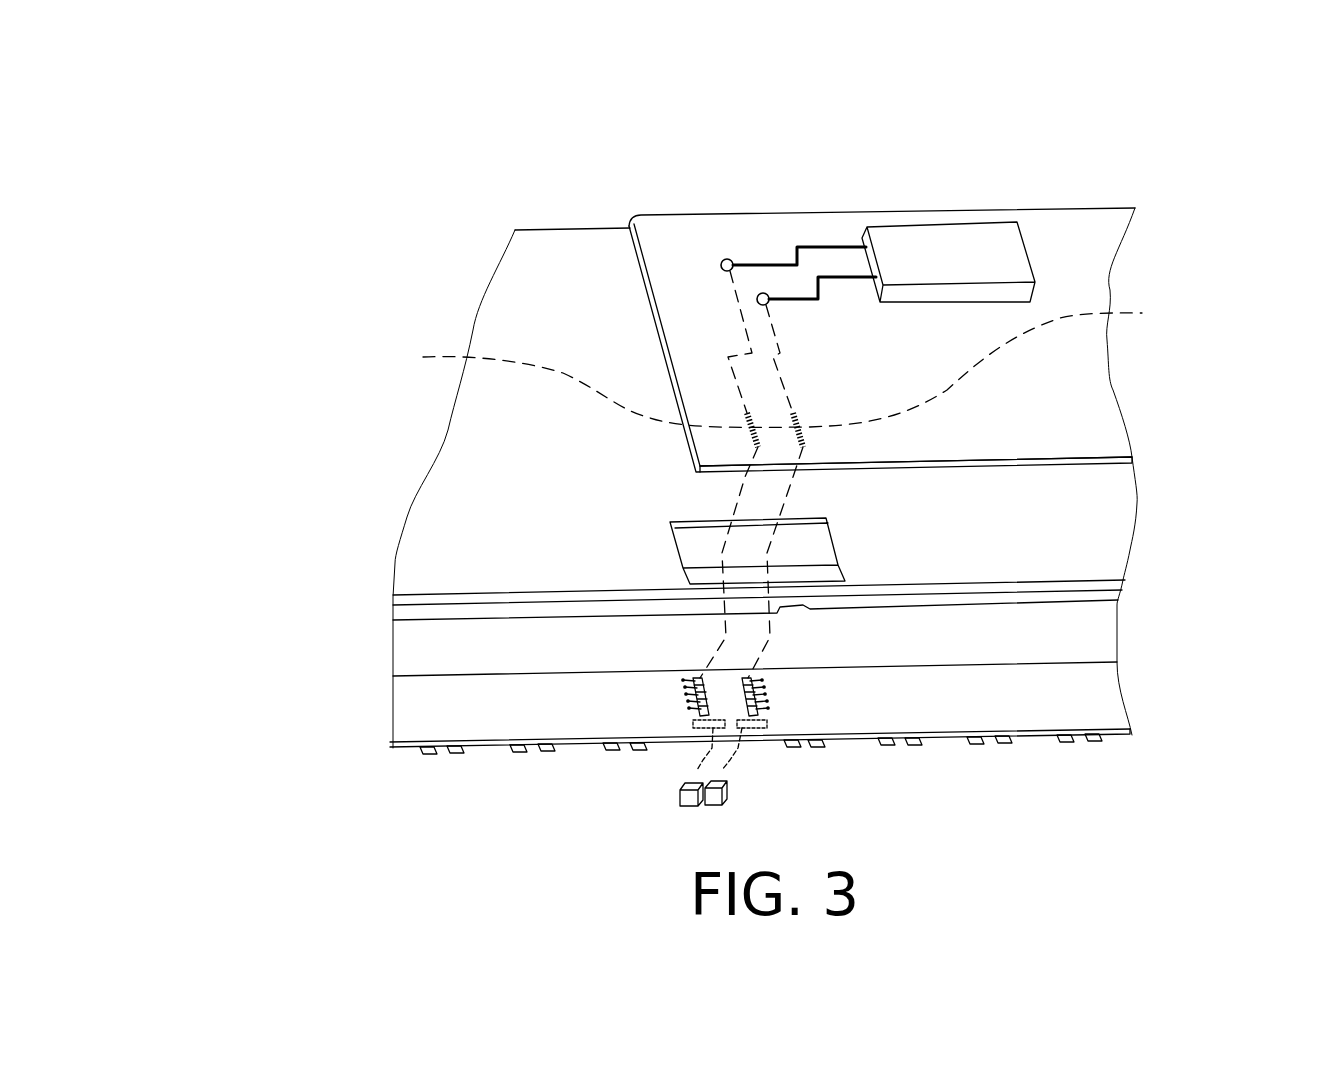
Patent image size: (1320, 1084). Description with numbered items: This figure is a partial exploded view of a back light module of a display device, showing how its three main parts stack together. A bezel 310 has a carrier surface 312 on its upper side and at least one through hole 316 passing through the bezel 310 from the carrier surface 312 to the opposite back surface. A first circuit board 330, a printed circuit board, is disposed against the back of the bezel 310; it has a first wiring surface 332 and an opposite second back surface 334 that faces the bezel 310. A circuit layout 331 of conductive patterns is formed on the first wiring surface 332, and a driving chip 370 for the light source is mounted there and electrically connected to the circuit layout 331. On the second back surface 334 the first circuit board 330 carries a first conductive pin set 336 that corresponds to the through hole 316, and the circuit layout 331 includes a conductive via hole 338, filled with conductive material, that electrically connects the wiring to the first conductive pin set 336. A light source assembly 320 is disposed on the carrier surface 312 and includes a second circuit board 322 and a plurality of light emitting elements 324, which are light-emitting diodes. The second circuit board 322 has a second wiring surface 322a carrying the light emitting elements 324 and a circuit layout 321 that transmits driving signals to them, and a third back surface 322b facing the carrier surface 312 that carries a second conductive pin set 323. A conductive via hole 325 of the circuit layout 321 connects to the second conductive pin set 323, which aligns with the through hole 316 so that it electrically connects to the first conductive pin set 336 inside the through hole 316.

The bezel 310 is at (1100, 548).
The carrier surface 312 is at (437, 620).
The through hole 316 is at (697, 548).
The light source assembly 320 is at (796, 688).
The circuit layout 321 is at (767, 740).
The second circuit board 322 is at (1093, 690).
The second wiring surface 322a is at (1027, 740).
The third back surface 322b is at (1055, 690).
The second conductive pin set 323 is at (698, 678).
The light emitting elements 324 is at (690, 806).
The conductive via hole 325 is at (683, 695).
The first circuit board 330 is at (786, 400).
The circuit layout 331 is at (830, 243).
The first wiring surface 332 is at (1085, 232).
The second back surface 334 is at (1082, 465).
The first conductive pin set 336 is at (783, 363).
The conductive via hole 338 is at (727, 258).
The driving chip 370 is at (942, 237).